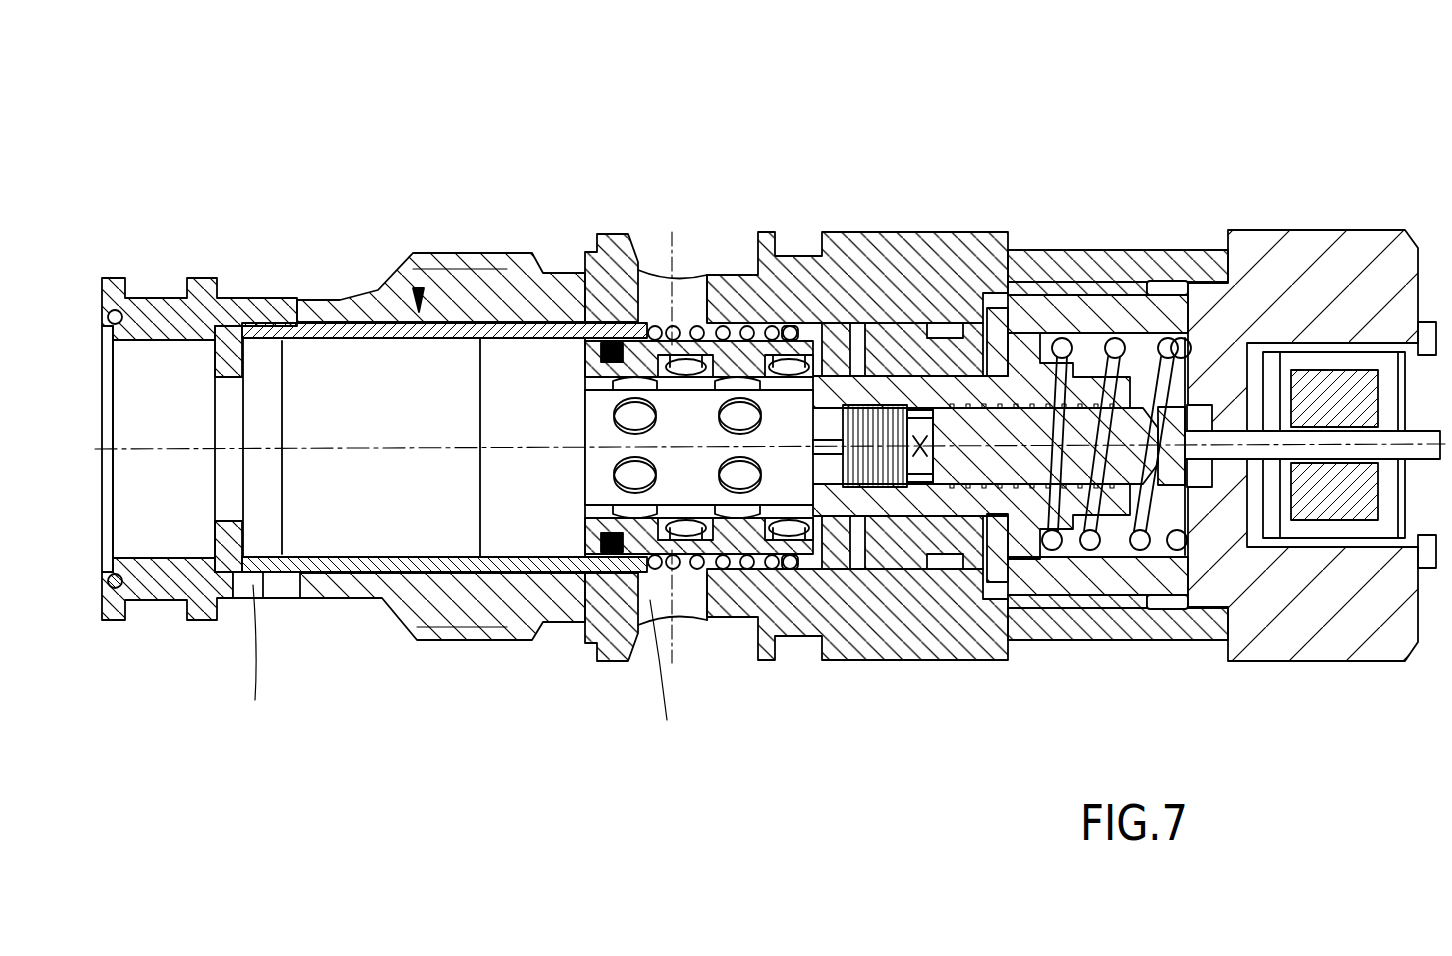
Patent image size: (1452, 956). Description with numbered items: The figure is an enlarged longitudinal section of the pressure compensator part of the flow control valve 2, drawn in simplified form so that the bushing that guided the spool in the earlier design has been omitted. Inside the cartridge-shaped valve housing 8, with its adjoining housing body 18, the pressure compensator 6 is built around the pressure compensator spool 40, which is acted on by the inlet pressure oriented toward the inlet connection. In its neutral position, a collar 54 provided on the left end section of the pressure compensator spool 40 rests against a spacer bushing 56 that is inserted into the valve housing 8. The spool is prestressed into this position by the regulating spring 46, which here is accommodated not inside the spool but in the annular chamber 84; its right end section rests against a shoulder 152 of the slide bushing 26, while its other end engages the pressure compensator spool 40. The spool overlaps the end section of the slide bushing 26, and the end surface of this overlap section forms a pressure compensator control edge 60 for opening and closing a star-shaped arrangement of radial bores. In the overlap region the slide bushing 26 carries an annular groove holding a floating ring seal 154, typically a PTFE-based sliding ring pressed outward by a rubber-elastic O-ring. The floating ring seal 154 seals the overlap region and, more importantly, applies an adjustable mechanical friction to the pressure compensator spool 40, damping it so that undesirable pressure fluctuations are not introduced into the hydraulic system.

The flow control valve 2 is at (872, 205).
The pressure compensator 6 is at (413, 253).
The valve housing 8 is at (620, 270).
The housing body 18 is at (943, 503).
The slide bushing 26 is at (984, 540).
The pressure compensator spool 40 is at (507, 330).
The regulating spring 46 is at (770, 340).
The collar 54 is at (233, 350).
The spacer bushing 56 is at (137, 330).
The pressure compensator control edge 60 is at (662, 273).
The annular chamber 84 is at (723, 567).
The shoulder 152 is at (788, 570).
The floating ring seal 154 is at (610, 548).